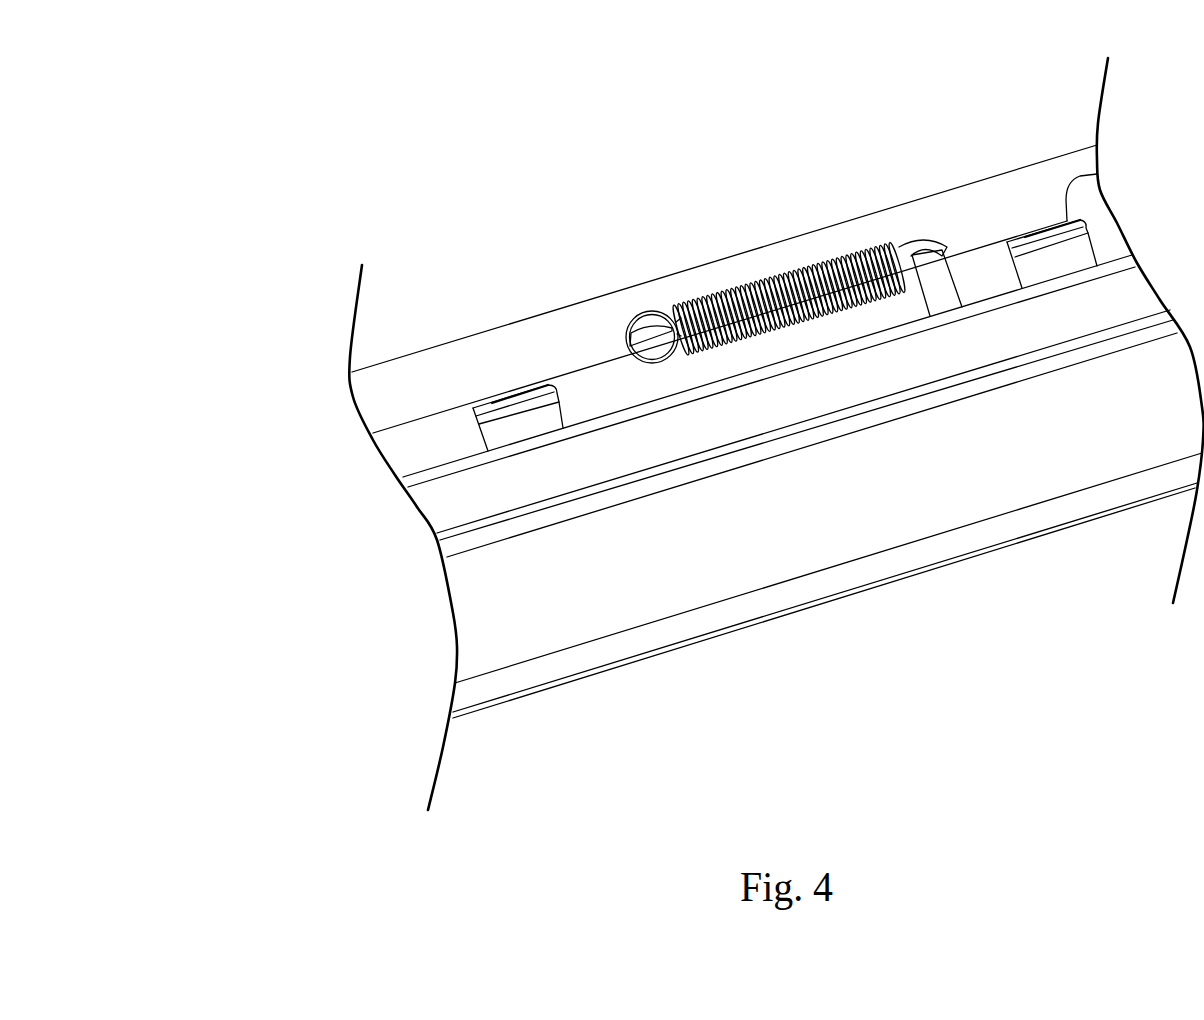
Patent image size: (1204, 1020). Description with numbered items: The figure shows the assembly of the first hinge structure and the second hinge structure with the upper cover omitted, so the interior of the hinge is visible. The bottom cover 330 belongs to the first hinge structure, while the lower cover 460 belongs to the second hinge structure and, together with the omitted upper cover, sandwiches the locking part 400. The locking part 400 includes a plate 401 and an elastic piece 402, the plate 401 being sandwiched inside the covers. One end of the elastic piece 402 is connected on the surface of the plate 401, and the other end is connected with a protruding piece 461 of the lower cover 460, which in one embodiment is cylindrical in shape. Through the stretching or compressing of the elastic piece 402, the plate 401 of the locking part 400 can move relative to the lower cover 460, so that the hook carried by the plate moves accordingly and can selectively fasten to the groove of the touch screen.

The bottom cover 330 is at (490, 617).
The locking part 400 is at (387, 405).
The plate 401 is at (578, 337).
The elastic piece 402 is at (776, 280).
The lower cover 460 is at (450, 509).
The protruding piece 461 is at (930, 272).